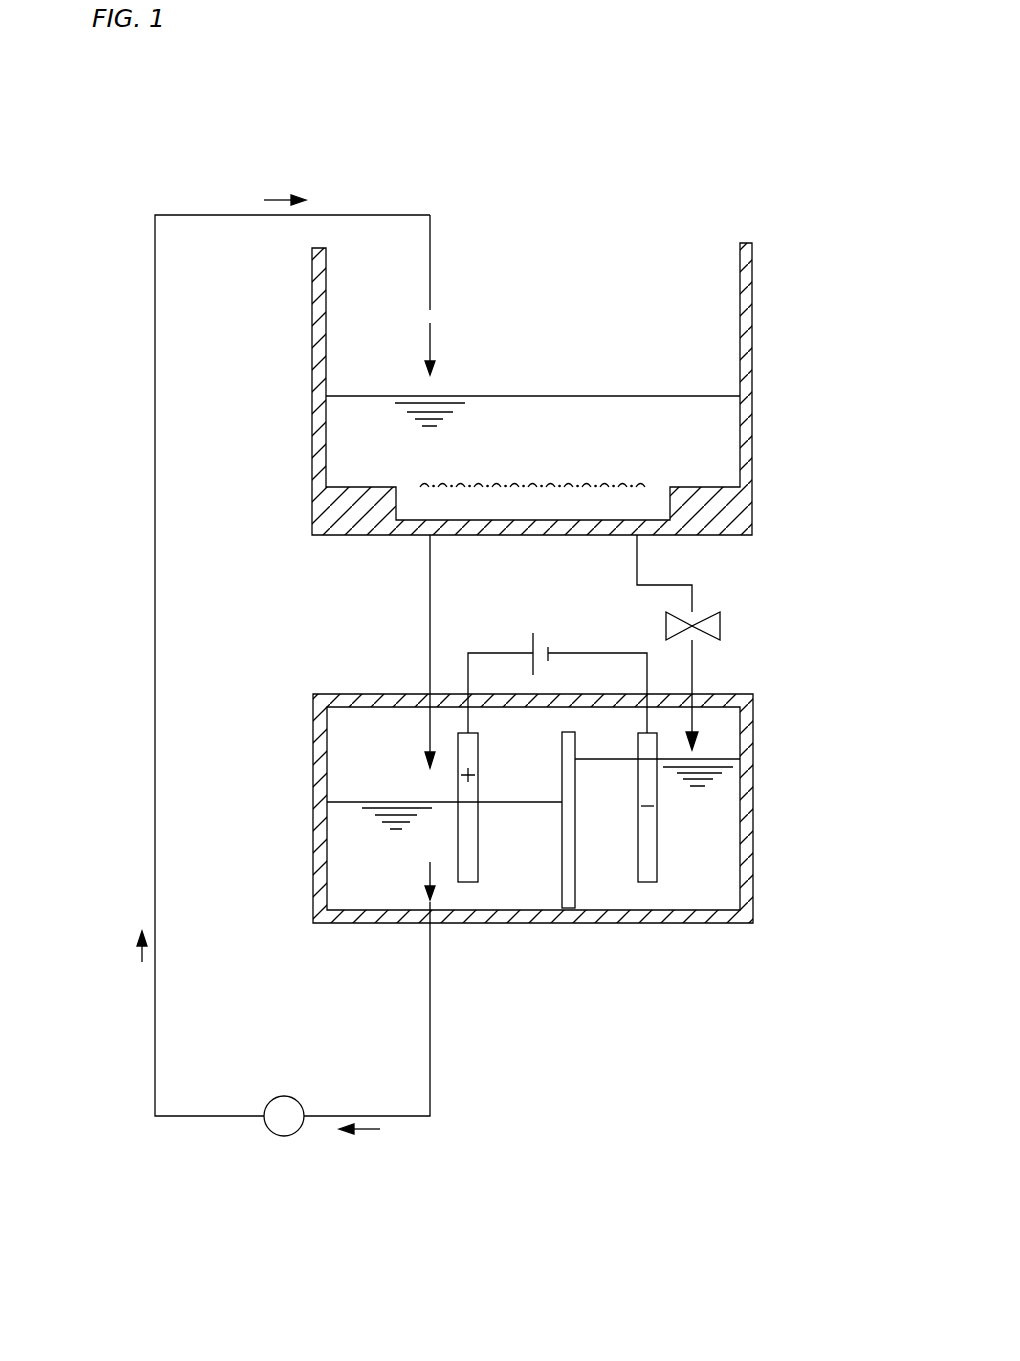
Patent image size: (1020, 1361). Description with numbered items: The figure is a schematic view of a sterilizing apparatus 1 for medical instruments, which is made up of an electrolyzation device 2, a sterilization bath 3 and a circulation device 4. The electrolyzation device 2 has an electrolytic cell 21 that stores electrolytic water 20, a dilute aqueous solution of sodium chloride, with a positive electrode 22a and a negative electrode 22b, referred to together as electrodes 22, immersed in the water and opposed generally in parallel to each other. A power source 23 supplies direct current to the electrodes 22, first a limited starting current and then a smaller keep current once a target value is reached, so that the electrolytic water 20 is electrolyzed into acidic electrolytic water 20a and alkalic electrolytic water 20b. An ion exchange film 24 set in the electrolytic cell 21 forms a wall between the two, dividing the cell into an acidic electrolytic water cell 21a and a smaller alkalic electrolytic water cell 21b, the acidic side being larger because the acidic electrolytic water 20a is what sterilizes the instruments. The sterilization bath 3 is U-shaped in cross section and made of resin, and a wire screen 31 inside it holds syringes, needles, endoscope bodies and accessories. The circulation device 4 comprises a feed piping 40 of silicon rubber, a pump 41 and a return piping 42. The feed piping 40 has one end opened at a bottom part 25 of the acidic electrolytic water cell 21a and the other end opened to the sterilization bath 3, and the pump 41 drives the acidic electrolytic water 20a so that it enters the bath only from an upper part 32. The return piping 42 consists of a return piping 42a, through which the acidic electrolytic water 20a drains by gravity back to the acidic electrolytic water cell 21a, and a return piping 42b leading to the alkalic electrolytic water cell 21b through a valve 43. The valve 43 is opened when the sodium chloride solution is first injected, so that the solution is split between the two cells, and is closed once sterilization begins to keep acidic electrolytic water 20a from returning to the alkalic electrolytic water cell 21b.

The sterilizing apparatus 1 is at (674, 184).
The electrolyzation device 2 is at (770, 680).
The sterilization bath 3 is at (754, 251).
The circulation device 4 is at (208, 1158).
The electrolytic water 20 is at (493, 999).
The acidic electrolytic water 20a is at (722, 413).
The alkalic electrolytic water 20b is at (597, 897).
The electrolytic cell 21 is at (752, 768).
The acidic electrolytic water cell 21a is at (347, 750).
The alkalic electrolytic water cell 21b is at (722, 752).
The electrodes 22 is at (300, 648).
The positive electrode 22a is at (458, 738).
The negative electrode 22b is at (637, 738).
The power source 23 is at (548, 644).
The ion exchange film 24 is at (578, 862).
The bottom part 25 is at (376, 910).
The wire screen 31 is at (447, 483).
The upper part 32 is at (343, 255).
The feed piping 40 is at (155, 549).
The pump 41 is at (283, 1096).
The return piping 42 is at (595, 566).
The return piping 42a is at (432, 553).
The return piping 42b is at (637, 548).
The valve 43 is at (722, 623).